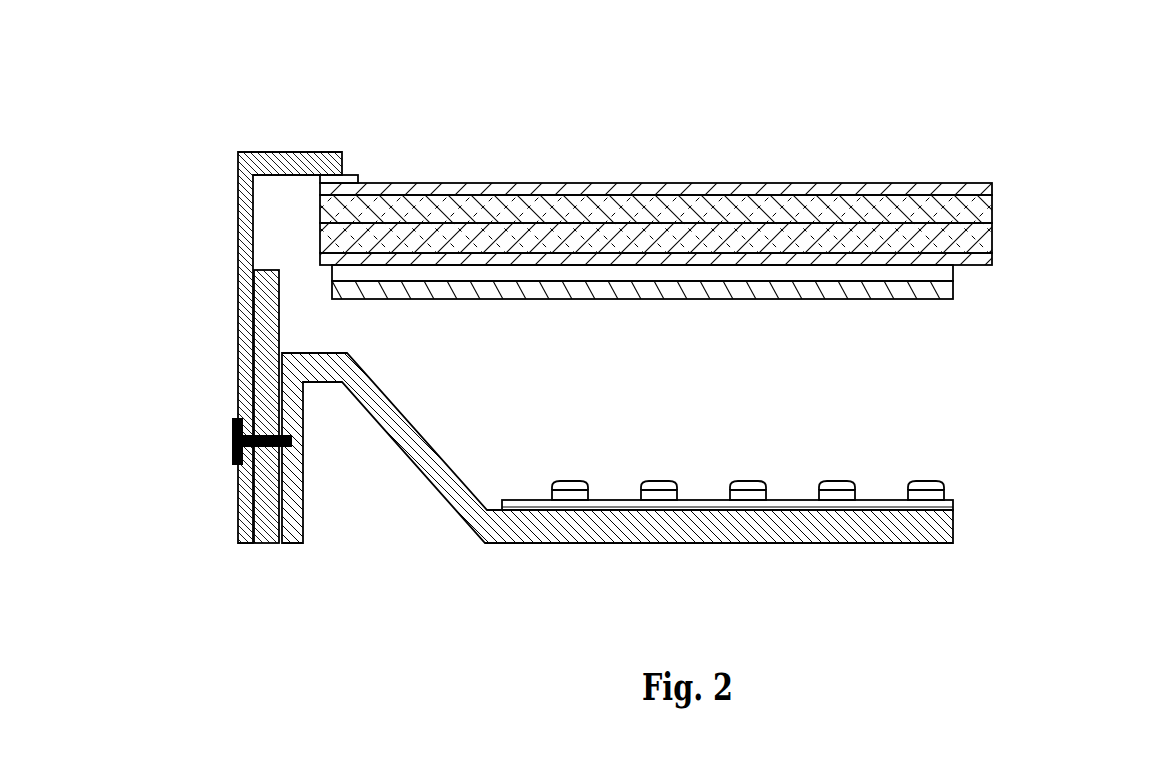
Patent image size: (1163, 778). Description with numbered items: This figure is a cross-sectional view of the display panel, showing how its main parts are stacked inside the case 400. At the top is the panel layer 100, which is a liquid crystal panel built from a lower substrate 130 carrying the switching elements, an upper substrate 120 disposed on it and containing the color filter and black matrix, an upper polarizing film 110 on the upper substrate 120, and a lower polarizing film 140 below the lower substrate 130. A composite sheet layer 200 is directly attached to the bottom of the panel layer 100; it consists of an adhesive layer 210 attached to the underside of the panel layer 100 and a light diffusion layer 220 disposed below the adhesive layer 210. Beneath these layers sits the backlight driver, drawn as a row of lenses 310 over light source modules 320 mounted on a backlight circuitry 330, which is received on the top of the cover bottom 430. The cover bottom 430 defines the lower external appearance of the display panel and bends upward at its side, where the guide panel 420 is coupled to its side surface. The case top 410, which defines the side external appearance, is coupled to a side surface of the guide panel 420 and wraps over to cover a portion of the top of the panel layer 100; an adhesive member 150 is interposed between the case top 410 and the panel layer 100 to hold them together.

The panel layer 100 is at (731, 225).
The upper polarizing film 110 is at (994, 189).
The upper substrate 120 is at (994, 208).
The lower substrate 130 is at (994, 239).
The lower polarizing film 140 is at (990, 259).
The adhesive member 150 is at (360, 180).
The composite sheet layer 200 is at (642, 332).
The adhesive layer 210 is at (938, 287).
The light diffusion layer 220 is at (862, 273).
The lenses 310 is at (581, 480).
The light source modules 320 is at (552, 498).
The backlight circuitry 330 is at (700, 500).
The case 400 is at (542, 305).
The case top 410 is at (238, 245).
The guide panel 420 is at (265, 533).
The cover bottom 430 is at (713, 533).